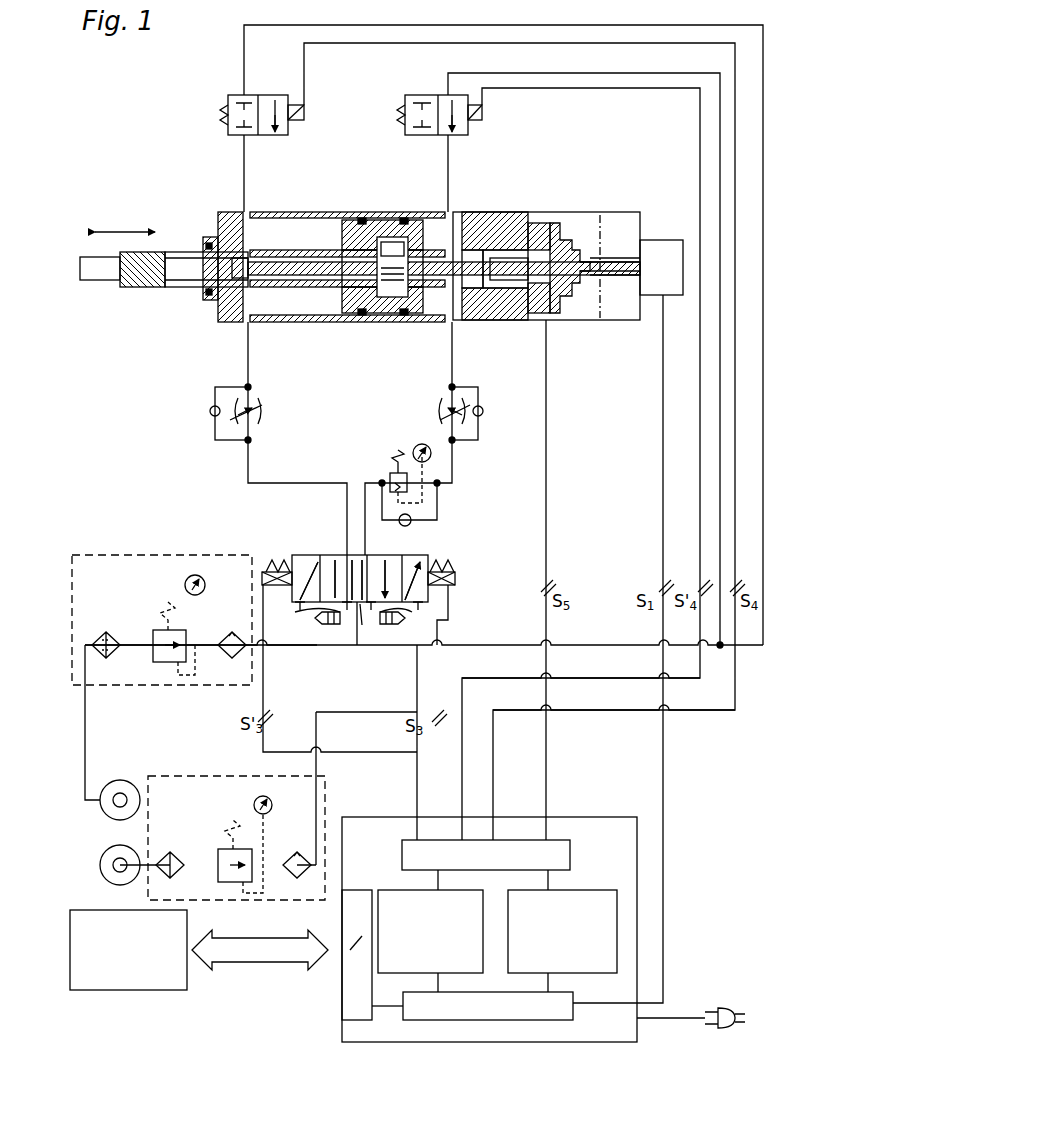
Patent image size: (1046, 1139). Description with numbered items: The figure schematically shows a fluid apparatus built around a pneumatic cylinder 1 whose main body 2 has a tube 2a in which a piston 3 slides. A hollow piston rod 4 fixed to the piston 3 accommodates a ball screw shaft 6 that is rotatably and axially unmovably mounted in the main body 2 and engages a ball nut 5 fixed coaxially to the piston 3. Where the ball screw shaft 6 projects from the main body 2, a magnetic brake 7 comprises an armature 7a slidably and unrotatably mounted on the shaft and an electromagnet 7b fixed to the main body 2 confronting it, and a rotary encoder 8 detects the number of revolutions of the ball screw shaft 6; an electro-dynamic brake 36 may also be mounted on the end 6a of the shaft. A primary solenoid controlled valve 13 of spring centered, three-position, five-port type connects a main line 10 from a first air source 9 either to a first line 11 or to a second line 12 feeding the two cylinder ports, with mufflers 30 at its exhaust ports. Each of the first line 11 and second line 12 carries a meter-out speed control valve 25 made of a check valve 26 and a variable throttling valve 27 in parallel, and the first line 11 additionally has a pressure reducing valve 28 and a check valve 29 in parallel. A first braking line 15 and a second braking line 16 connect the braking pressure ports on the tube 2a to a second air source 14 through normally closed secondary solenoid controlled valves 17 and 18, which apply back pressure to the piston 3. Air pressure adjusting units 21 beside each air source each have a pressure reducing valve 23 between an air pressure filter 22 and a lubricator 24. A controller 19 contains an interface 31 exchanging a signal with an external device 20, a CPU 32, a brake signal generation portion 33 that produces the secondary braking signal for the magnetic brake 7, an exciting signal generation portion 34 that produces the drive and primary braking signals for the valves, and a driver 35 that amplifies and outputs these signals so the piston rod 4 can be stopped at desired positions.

The pneumatic cylinder 1 is at (346, 322).
The main body 2 is at (498, 213).
The tube 2a is at (263, 323).
The piston 3 is at (372, 212).
The hollow piston rod 4 is at (150, 252).
The ball nut 5 is at (393, 297).
The ball screw shaft 6 is at (303, 280).
The end of ball screw shaft 6a is at (632, 262).
The magnetic brake 7 is at (547, 322).
The armature 7a is at (578, 228).
The electromagnet 7b is at (546, 224).
The rotary encoder 8 is at (664, 242).
The first air source 9 is at (120, 780).
The main line 10 is at (335, 650).
The first line 11 is at (452, 463).
The second line 12 is at (247, 463).
The primary solenoid controlled valve 13 is at (312, 552).
The second air source 14 is at (100, 865).
The first braking line 15 is at (450, 152).
The second braking line 16 is at (247, 165).
The secondary solenoid controlled valve 17 is at (430, 95).
The secondary solenoid controlled valve 18 is at (255, 95).
The controller 19 is at (582, 815).
The external device 20 is at (148, 990).
The air pressure adjusting unit 21 is at (125, 555).
The air pressure filter 22 is at (106, 632).
The pressure reducing valve 23 is at (162, 630).
The lubricator 24 is at (232, 632).
The speed control valve 25 is at (217, 385).
The check valve 26 is at (210, 412).
The variable throttling valve 27 is at (258, 413).
The pressure reducing valve 28 is at (390, 473).
The check valve 29 is at (412, 522).
The muffler 30 is at (322, 624).
The interface 31 is at (342, 990).
The CPU 32 is at (546, 1010).
The brake signal generation portion 33 is at (617, 932).
The exciting signal generation portion 34 is at (393, 890).
The driver 35 is at (560, 855).
The electro-dynamic brake 36 is at (602, 300).